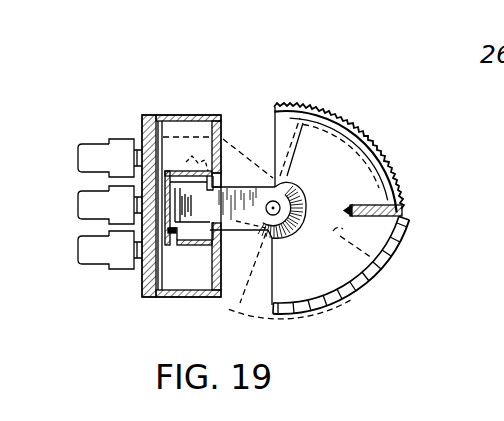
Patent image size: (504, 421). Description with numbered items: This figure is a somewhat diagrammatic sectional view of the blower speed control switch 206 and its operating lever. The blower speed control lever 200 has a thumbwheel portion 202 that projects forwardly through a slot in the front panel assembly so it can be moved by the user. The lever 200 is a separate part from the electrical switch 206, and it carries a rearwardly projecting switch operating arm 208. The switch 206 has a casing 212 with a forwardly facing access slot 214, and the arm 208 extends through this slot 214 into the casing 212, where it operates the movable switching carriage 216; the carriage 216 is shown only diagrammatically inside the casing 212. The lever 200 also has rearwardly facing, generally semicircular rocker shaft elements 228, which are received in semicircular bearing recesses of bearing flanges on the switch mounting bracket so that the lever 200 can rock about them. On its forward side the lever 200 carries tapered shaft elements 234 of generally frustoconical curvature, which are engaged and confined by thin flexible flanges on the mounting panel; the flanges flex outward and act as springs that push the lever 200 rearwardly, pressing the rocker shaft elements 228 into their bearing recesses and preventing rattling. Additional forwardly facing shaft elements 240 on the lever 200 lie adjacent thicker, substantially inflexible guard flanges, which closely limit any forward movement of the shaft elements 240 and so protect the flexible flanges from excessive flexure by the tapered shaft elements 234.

The blower speed control lever 200 is at (409, 211).
The thumbwheel portion 202 is at (383, 160).
The blower speed control switch 206 is at (132, 100).
The switch operating arm 208 is at (248, 187).
The casing 212 is at (167, 297).
The access slot 214 is at (223, 140).
The switching carriage 216 is at (183, 254).
The rocker shaft elements 228 is at (482, 324).
The tapered shaft elements 234 is at (325, 119).
The shaft elements 240 is at (297, 237).